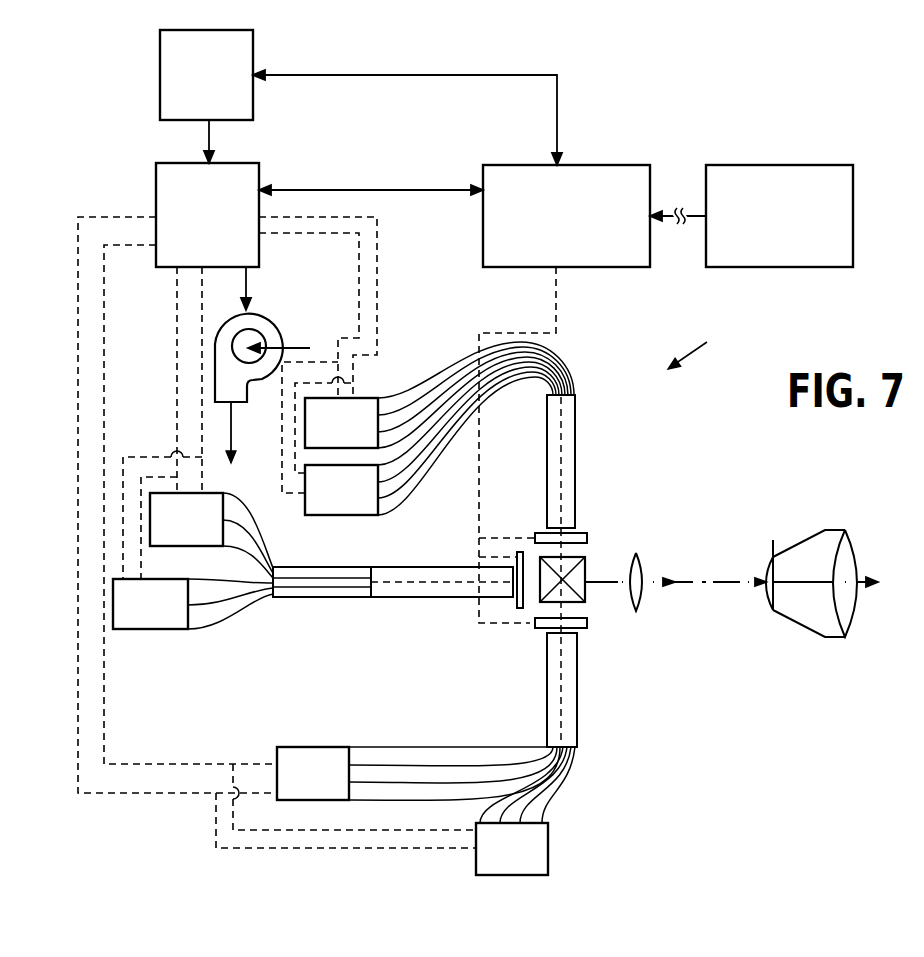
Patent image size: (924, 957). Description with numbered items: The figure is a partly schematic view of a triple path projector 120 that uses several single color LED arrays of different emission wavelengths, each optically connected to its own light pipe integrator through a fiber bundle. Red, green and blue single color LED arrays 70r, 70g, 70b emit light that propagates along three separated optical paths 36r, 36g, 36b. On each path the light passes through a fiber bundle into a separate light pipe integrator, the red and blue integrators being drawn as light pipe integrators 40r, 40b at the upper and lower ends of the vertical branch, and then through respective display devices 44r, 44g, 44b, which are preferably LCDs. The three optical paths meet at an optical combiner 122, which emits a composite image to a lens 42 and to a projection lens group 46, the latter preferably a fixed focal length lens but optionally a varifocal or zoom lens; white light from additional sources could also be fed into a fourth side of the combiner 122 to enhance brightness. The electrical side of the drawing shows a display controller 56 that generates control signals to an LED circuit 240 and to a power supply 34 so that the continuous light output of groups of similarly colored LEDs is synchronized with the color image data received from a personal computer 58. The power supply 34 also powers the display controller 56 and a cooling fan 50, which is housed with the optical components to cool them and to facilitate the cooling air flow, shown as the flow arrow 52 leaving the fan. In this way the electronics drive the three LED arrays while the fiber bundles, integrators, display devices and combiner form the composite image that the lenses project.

The LED circuit 240 is at (247, 45).
The power supply 34 is at (252, 173).
The cooling fan 50 is at (258, 316).
The air flow 52 is at (232, 423).
The display controller 56 is at (590, 267).
The personal computer 58 is at (765, 267).
The triple path projector 120 is at (703, 343).
The red single color LED array 70r is at (367, 398).
The green single color LED array 70g is at (178, 546).
The blue single color LED array 70b is at (305, 747).
The light pipe integrator 40r is at (576, 432).
The red optical path 36r is at (561, 475).
The green optical path 36g is at (430, 597).
The blue optical path 36b is at (563, 673).
The light pipe integrator 40b is at (578, 722).
The red display device 44r is at (588, 537).
The green display device 44g is at (521, 608).
The blue display device 44b is at (588, 623).
The optical combiner 122 is at (585, 557).
The lens 42 is at (640, 553).
The projection lens group 46 is at (798, 547).